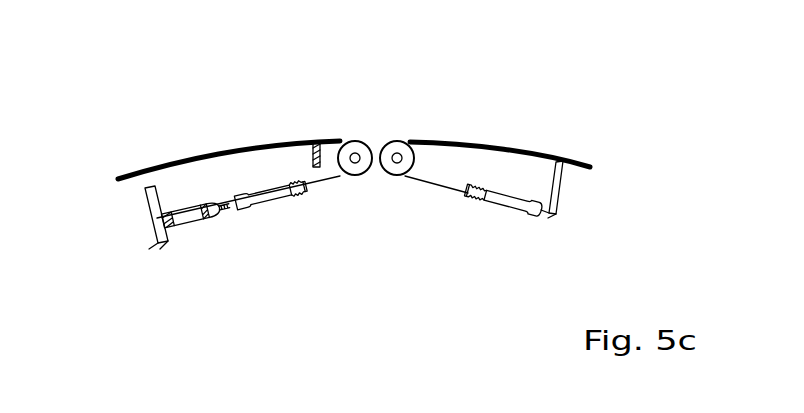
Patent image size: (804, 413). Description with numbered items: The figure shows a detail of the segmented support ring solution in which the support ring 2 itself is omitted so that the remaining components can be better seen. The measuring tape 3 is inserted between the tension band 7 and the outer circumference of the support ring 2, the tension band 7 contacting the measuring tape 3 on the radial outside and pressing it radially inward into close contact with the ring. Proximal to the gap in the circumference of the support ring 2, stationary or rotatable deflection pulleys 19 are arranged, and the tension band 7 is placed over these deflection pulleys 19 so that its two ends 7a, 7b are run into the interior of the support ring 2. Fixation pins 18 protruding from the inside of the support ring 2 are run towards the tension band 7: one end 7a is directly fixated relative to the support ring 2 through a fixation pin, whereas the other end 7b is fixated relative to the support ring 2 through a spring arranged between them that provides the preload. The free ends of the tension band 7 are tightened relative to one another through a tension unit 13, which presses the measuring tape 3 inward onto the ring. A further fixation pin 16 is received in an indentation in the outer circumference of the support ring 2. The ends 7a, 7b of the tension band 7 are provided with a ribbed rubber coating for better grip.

The support ring 2 is at (322, 184).
The measuring tape 3 is at (248, 147).
The tension band 7 is at (350, 142).
The end of the tension band 7a is at (527, 218).
The end of the tension band 7b is at (280, 207).
The tension unit 13 is at (192, 230).
The fixation pin 16 is at (310, 137).
The fixation pins 18 is at (140, 252).
The deflection pulleys 19 is at (362, 152).